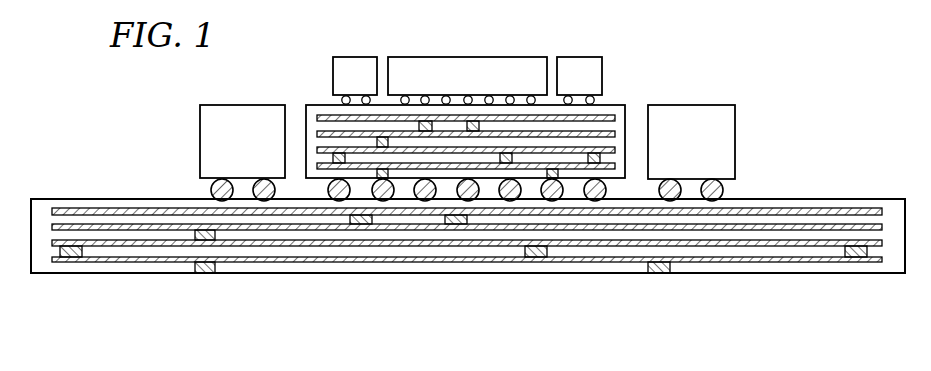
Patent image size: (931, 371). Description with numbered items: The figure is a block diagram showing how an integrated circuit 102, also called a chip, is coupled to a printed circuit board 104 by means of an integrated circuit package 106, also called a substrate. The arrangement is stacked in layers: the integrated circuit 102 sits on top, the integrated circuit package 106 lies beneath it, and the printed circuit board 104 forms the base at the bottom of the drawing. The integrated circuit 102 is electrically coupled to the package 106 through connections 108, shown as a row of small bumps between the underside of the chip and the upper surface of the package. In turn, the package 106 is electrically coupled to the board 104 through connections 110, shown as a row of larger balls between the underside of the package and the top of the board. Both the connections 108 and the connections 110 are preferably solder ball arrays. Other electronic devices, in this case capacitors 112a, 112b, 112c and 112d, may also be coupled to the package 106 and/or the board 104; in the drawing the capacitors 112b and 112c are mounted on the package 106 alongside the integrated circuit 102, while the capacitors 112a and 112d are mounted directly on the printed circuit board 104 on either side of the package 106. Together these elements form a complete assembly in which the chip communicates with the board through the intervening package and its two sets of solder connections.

The integrated circuit 102 is at (498, 56).
The printed circuit board 104 is at (403, 274).
The integrated circuit package 106 is at (614, 104).
The connections 108 is at (338, 99).
The connections 110 is at (211, 189).
The capacitor 112a is at (199, 133).
The capacitor 112b is at (355, 56).
The capacitor 112c is at (578, 56).
The capacitor 112d is at (736, 136).